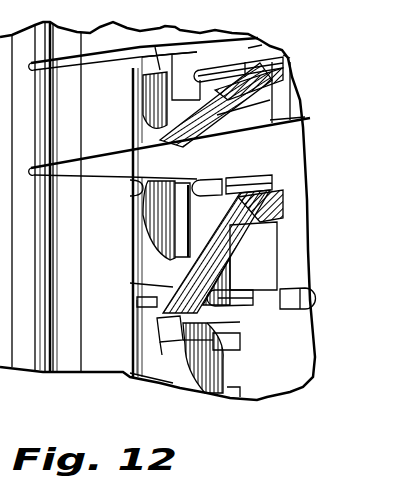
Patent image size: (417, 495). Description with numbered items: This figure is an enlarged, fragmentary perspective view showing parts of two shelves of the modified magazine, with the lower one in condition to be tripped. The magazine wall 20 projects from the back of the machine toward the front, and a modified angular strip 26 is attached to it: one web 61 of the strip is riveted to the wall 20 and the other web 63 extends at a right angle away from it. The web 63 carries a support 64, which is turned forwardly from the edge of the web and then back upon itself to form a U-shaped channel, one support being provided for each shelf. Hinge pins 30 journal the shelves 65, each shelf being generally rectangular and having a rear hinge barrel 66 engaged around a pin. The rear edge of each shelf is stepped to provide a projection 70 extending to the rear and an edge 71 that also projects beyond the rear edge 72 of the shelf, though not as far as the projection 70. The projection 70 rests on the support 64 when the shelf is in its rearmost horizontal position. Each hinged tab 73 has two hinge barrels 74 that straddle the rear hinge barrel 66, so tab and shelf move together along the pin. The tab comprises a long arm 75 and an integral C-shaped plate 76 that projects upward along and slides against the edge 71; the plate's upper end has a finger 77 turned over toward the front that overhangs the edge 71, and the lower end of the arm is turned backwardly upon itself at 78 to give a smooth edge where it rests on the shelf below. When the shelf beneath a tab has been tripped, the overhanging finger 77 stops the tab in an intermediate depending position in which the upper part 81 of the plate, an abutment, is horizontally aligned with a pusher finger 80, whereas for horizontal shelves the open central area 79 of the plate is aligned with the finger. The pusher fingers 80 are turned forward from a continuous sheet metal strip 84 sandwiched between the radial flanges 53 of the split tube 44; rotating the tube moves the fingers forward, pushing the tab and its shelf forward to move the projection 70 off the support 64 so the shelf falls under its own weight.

The wall 20 is at (306, 213).
The angular strip 26 is at (277, 100).
The hinge pin 30 is at (205, 76).
The tube 44 is at (28, 372).
The radial flange 53 is at (80, 372).
The web 61 is at (264, 118).
The web 63 is at (222, 268).
The support 64 is at (178, 76).
The shelf 65 is at (270, 45).
The hinge barrel 66 is at (250, 48).
The projection 70 is at (240, 324).
The edge 71 is at (157, 70).
The rear edge 72 is at (115, 70).
The hinged tab 73 is at (284, 80).
The hinge barrel 74 is at (284, 54).
The arm 75 is at (240, 118).
The C-shaped plate 76 is at (143, 113).
The finger 77 is at (213, 340).
The turned-back lower end 78 is at (165, 345).
The open central area 79 is at (172, 88).
The pusher finger 80 is at (133, 212).
The upper part 81 is at (190, 178).
The sheet metal strip 84 is at (118, 372).